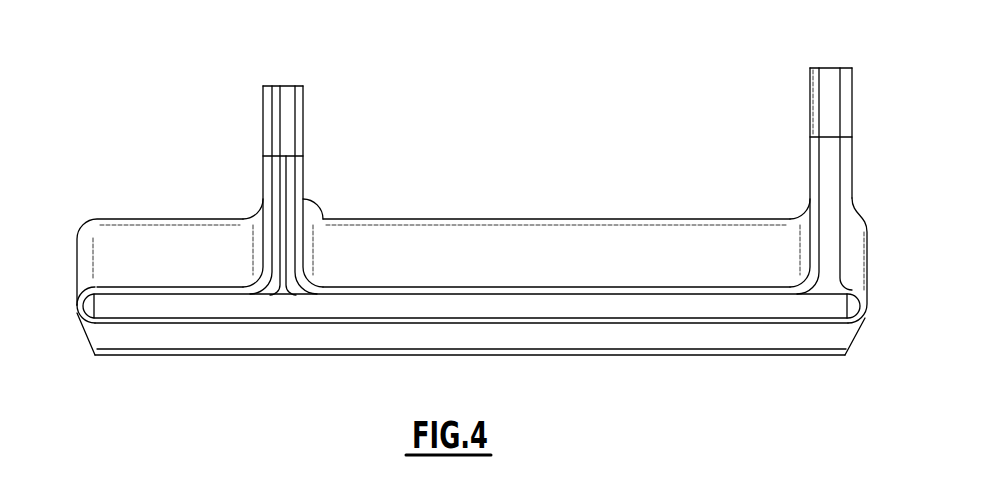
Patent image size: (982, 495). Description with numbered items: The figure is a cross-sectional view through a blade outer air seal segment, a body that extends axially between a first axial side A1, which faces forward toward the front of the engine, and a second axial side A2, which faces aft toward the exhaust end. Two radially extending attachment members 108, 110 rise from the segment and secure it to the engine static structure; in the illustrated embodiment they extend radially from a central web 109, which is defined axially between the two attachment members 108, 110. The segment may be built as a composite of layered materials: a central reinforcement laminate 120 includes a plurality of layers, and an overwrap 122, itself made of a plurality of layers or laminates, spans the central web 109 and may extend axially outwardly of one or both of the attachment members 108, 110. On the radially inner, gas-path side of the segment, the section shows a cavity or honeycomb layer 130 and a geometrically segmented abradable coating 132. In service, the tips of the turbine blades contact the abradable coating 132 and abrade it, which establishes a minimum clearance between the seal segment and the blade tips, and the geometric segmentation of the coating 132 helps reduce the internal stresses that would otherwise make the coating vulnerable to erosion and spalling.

The attachment member 108 is at (829, 78).
The central web 109 is at (526, 307).
The attachment member 110 is at (267, 92).
The central reinforcement laminate 120 is at (448, 307).
The overwrap 122 is at (305, 198).
The honeycomb layer 130 is at (680, 338).
The geometrically segmented abradable coating 132 is at (751, 350).
The first axial side A1 is at (78, 306).
The second axial side A2 is at (867, 306).